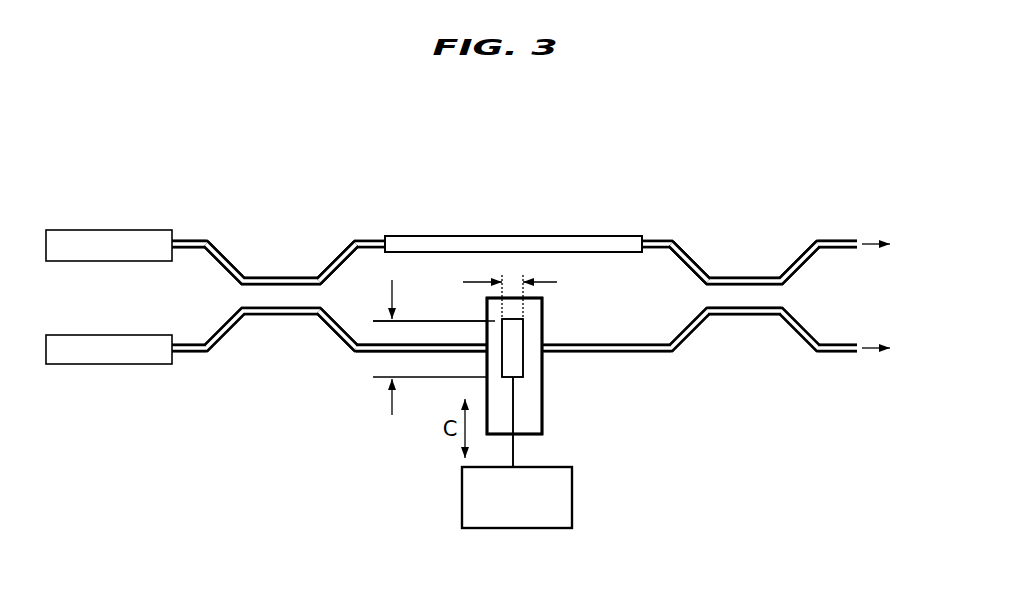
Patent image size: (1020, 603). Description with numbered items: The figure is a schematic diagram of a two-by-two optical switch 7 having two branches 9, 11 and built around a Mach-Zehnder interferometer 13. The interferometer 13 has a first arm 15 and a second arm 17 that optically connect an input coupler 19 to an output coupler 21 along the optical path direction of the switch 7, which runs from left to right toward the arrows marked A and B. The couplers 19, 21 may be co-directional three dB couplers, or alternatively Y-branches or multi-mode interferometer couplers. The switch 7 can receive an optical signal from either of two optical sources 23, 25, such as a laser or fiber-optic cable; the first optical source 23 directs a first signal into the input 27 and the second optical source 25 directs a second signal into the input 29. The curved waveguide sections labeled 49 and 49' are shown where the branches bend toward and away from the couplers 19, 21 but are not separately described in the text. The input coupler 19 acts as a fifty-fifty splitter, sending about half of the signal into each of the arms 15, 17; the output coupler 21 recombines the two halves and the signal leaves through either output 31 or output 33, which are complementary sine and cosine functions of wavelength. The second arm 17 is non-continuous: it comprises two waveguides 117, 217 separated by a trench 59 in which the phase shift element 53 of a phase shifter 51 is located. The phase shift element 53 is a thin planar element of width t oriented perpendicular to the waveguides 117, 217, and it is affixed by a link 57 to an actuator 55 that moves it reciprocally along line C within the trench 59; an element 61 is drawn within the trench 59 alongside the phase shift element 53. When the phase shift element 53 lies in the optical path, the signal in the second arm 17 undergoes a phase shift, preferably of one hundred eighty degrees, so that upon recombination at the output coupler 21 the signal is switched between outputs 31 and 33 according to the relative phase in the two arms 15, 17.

The optical switch 7 is at (362, 410).
The first branch 9 is at (246, 253).
The second branch 11 is at (243, 332).
The Mach-Zehnder interferometer 13 is at (499, 226).
The first arm 15 is at (366, 236).
The second arm 17 is at (368, 355).
The input coupler 19 is at (287, 258).
The output coupler 21 is at (757, 258).
The first optical source 23 is at (60, 243).
The second optical source 25 is at (70, 350).
The input 27 is at (195, 240).
The input 29 is at (200, 343).
The output 31 is at (840, 240).
The output 33 is at (840, 353).
The waveguide bend 49 is at (309, 266).
The waveguide bend 49' is at (731, 266).
The phase shifter 51 is at (685, 440).
The phase shift element 53 is at (525, 332).
The actuator 55 is at (535, 508).
The link 57 is at (516, 450).
The trench 59 is at (544, 423).
The heating element 61 is at (505, 393).
The waveguide 117 is at (412, 343).
The waveguide 217 is at (585, 353).